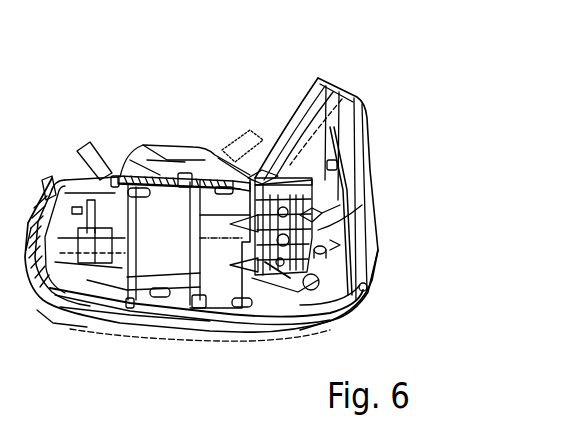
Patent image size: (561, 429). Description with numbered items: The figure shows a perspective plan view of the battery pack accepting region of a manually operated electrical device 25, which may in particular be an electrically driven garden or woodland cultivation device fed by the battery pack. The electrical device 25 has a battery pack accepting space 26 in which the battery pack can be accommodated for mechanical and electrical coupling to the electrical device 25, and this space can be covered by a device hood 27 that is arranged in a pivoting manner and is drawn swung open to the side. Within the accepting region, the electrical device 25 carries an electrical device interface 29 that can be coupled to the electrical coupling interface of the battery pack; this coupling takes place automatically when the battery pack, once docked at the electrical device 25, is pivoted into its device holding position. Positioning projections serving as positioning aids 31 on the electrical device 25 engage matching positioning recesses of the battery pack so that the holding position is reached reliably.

The electrical device 25 is at (185, 327).
The battery pack accepting space 26 is at (180, 295).
The device hood 27 is at (302, 112).
The electrical device interface 29 is at (250, 248).
The positioning aids 31 is at (247, 178).